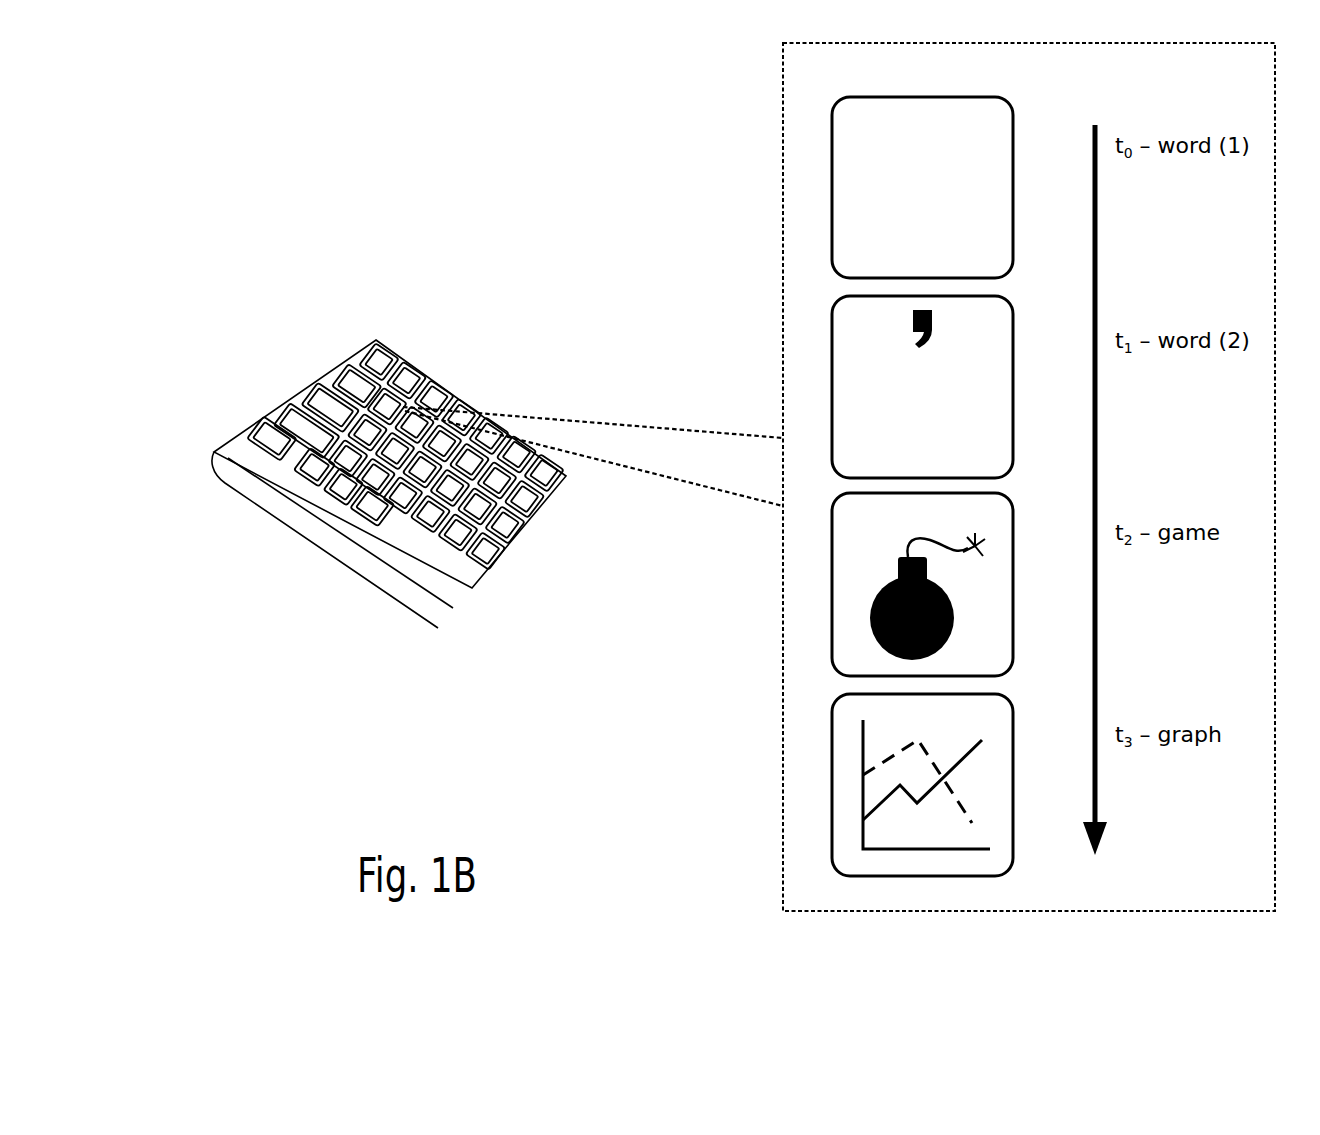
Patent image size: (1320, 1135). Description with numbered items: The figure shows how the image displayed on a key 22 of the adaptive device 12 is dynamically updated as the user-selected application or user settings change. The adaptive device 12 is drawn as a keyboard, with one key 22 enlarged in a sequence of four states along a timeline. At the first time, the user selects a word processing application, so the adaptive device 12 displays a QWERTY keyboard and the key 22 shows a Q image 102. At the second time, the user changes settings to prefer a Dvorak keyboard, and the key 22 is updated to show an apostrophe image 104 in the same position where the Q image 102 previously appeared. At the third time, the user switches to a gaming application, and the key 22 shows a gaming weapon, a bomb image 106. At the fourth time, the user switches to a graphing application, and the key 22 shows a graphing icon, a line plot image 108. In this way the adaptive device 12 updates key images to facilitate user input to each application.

The adaptive device 12 is at (363, 327).
The key 22 is at (1012, 99).
The Q image 102 is at (990, 166).
The apostrophe image 104 is at (990, 360).
The bomb image 106 is at (994, 580).
The line plot image 108 is at (990, 781).